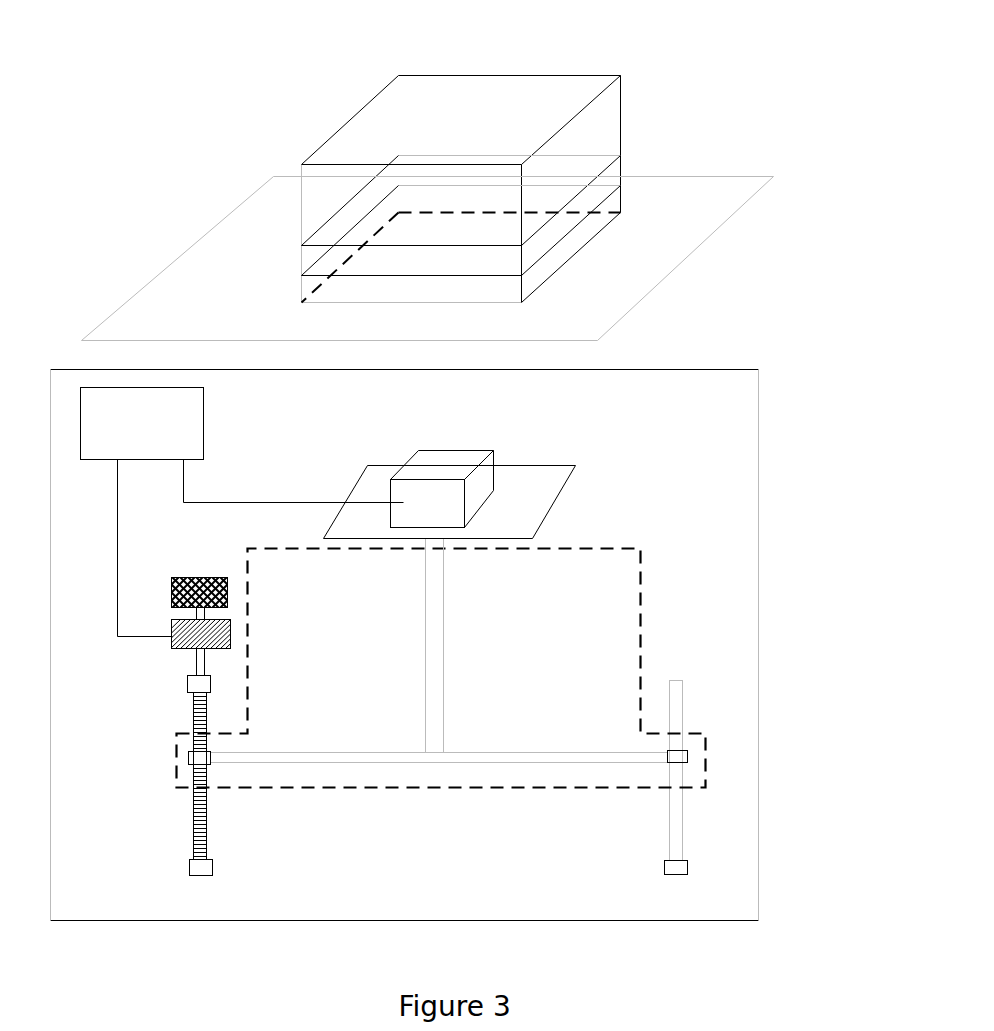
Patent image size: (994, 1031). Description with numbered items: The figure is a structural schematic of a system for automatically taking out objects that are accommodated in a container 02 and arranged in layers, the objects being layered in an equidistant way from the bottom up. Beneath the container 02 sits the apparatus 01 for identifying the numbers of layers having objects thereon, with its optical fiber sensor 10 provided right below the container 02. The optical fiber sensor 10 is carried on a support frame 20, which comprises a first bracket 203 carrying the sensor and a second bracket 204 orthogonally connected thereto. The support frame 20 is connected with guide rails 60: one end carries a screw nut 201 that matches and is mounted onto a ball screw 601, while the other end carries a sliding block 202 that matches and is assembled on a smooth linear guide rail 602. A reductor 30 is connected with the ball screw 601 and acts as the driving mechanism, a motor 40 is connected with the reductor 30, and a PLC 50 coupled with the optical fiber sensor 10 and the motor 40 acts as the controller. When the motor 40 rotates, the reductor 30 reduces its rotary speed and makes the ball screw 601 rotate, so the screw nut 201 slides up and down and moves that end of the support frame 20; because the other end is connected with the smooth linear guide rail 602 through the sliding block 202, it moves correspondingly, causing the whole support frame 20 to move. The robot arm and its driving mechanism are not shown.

The container 02 is at (573, 75).
The apparatus for identifying numbers of layers having objects thereon within a cont 01 is at (745, 369).
The PLC 50 is at (242, 512).
The motor 40 is at (192, 577).
The reductor 30 is at (172, 621).
The ball screw 601 is at (195, 717).
The smooth linear guide rail 602 is at (680, 713).
The support frame 20 is at (612, 543).
The first bracket 203 is at (443, 657).
The optical fiber sensor 10 is at (457, 457).
The second bracket 204 is at (525, 750).
The screw nut 201 is at (188, 757).
The sliding block 202 is at (687, 758).
The guide rails 60 is at (214, 805).